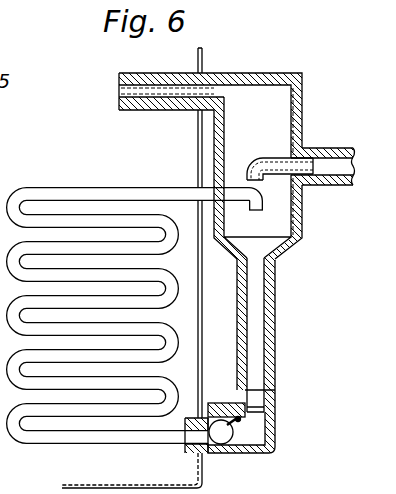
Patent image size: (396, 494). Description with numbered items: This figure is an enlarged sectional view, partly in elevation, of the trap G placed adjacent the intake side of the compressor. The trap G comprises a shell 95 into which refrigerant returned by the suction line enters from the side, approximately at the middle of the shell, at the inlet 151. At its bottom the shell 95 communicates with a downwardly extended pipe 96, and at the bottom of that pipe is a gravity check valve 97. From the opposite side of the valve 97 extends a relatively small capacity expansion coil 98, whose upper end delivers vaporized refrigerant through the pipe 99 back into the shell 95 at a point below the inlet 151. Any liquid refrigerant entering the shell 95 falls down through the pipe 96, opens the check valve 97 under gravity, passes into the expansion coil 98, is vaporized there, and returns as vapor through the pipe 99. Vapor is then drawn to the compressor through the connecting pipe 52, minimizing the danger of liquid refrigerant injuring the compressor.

The connecting pipe 52 is at (149, 81).
The trap G is at (251, 73).
The shell 95 is at (299, 114).
The inlet pipe 151 is at (252, 159).
The pipe 99 is at (263, 202).
The downwardly extended pipe 96 is at (277, 352).
The gravity check valve 97 is at (223, 449).
The expansion coil 98 is at (132, 436).